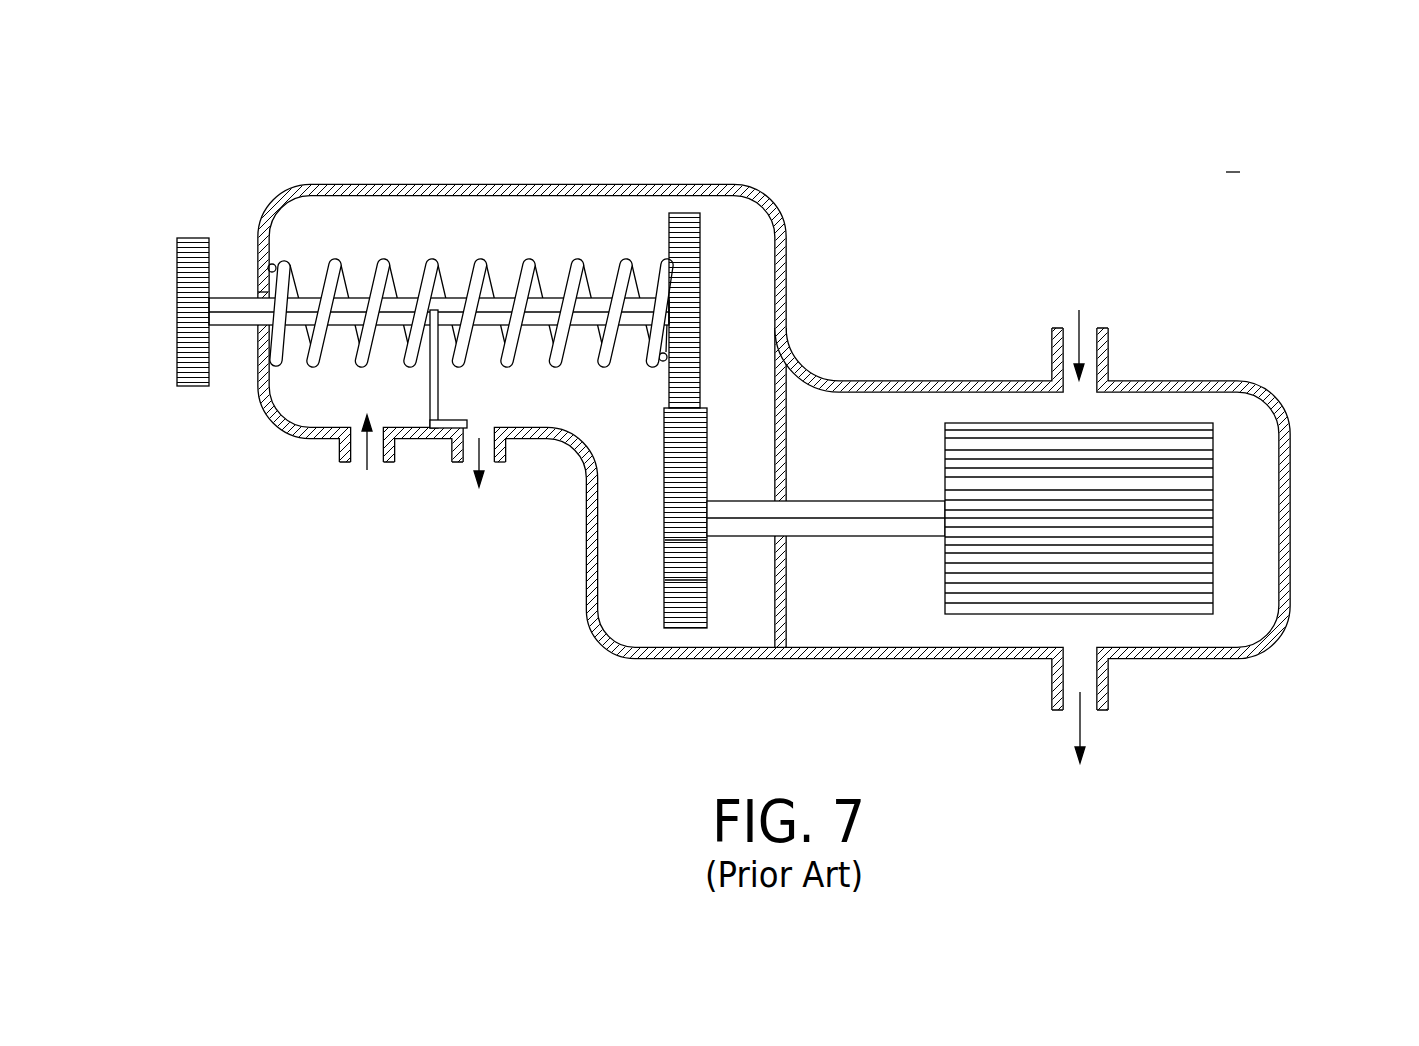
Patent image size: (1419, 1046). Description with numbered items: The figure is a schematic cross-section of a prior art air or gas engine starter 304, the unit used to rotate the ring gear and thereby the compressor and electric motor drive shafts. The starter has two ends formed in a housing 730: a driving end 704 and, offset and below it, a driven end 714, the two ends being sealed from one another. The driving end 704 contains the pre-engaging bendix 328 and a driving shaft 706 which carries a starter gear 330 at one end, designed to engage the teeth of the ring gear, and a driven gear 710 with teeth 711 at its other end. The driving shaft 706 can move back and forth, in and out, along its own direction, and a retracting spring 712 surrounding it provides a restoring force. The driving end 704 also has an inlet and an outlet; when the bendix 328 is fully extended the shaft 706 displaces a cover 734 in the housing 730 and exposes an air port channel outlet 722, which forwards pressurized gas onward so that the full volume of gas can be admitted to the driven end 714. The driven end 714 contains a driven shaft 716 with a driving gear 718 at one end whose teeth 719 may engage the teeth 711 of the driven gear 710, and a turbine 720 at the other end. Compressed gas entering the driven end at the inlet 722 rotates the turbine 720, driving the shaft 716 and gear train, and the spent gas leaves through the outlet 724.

The air or gas engine starter 304 is at (1232, 170).
The pre-engaging bendix 328 is at (233, 318).
The starter gear 330 is at (197, 380).
The driving end 704 is at (456, 172).
The driving shaft 706 is at (237, 292).
The driven gear 710 is at (701, 253).
The teeth 711 is at (692, 312).
The retracting spring 712 is at (423, 309).
The driven end 714 is at (1320, 463).
The driven shaft 716 is at (842, 511).
The driving gear 718 is at (686, 612).
The teeth 719 is at (680, 563).
The turbine 720 is at (377, 463).
The inlet 722 is at (1092, 320).
The outlet 724 is at (1090, 712).
The housing 730 is at (922, 660).
The cover 734 is at (440, 390).